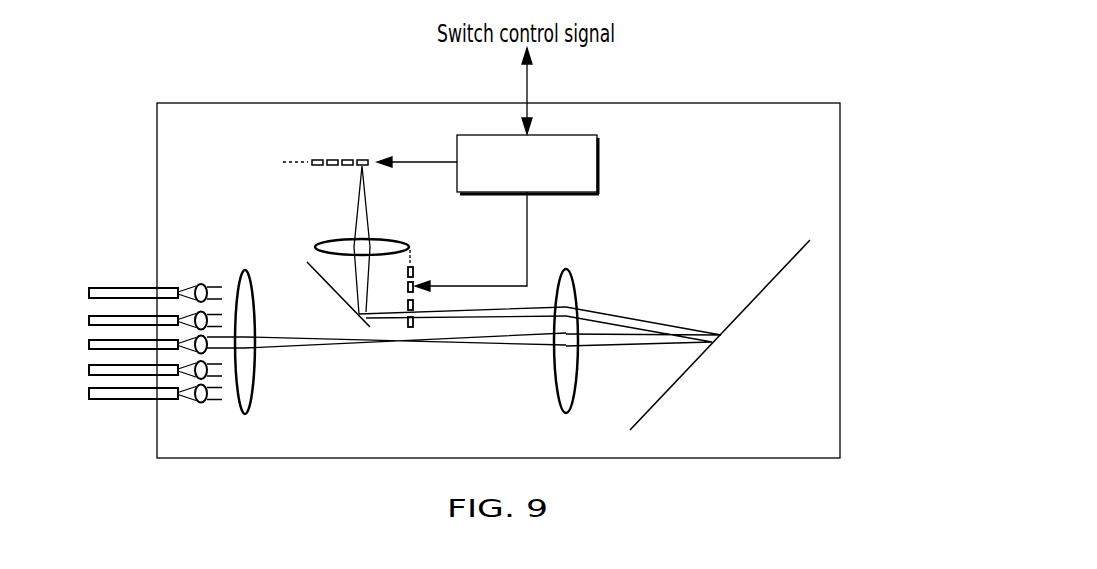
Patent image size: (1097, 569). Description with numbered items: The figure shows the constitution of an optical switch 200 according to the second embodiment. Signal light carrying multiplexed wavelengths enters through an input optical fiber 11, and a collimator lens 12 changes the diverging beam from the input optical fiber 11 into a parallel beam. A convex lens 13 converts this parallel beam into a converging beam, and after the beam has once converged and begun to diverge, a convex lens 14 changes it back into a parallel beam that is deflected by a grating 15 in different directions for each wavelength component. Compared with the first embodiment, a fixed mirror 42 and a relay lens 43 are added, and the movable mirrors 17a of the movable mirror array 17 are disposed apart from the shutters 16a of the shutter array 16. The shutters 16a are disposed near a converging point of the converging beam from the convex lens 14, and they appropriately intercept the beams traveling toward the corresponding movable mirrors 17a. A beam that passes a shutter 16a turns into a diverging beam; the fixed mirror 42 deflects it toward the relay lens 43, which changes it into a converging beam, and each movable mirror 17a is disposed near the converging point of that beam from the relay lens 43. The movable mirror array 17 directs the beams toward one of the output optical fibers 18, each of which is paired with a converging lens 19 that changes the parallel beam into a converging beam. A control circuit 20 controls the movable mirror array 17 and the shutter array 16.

The optical switch 200 is at (690, 107).
The control circuit 20 is at (603, 168).
The movable mirror array 17 is at (321, 116).
The movable mirror 17a is at (332, 158).
The relay lens 43 is at (338, 240).
The fixed mirror 42 is at (308, 268).
The shutter array 16 is at (455, 270).
The shutter 16a is at (417, 271).
The input optical fiber 11 is at (87, 343).
The output optical fiber 18 is at (107, 318).
The converging lens 19 is at (207, 300).
The collimator lens 12 is at (207, 342).
The convex lens 13 is at (252, 407).
The convex lens 14 is at (556, 406).
The grating 15 is at (663, 402).